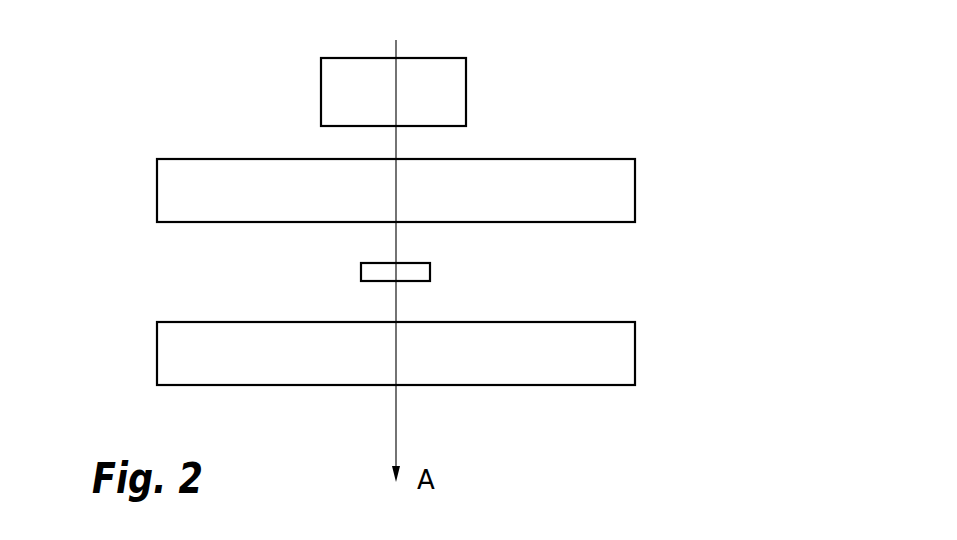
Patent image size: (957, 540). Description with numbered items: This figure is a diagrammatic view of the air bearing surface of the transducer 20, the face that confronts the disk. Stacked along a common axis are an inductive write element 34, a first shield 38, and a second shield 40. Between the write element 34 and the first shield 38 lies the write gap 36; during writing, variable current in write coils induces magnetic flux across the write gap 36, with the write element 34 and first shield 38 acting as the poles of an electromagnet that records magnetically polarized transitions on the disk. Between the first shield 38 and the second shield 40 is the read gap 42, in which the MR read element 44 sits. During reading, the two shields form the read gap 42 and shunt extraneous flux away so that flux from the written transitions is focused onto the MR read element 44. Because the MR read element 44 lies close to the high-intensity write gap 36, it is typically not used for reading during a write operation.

The transducer 20 is at (681, 388).
The inductive write element 34 is at (333, 90).
The write gap 36 is at (325, 143).
The first shield 38 is at (197, 178).
The second shield 40 is at (199, 372).
The read gap 42 is at (166, 281).
The MR read element 44 is at (360, 273).